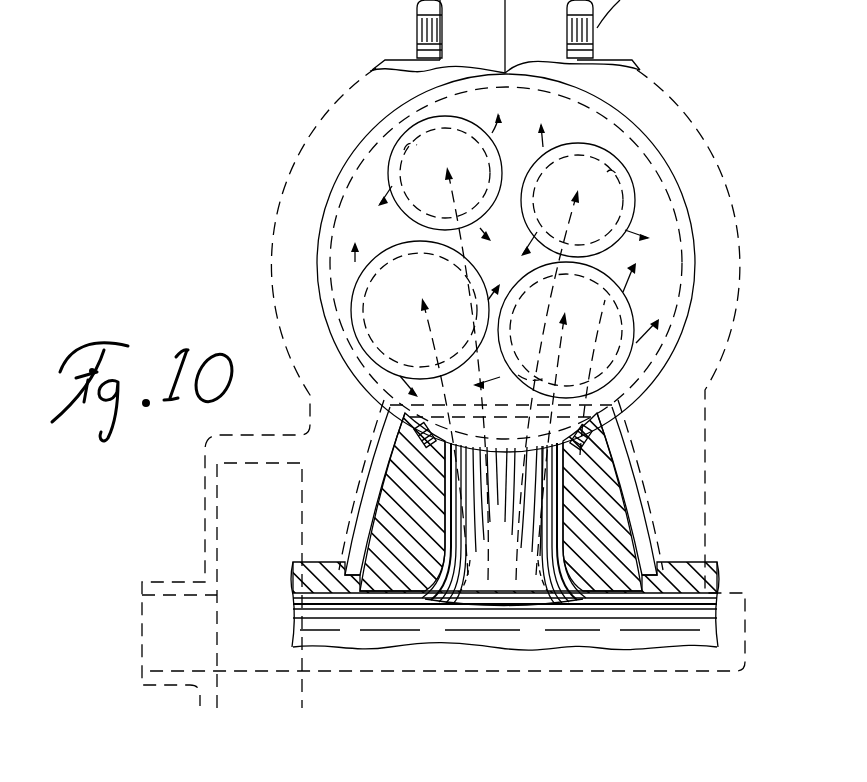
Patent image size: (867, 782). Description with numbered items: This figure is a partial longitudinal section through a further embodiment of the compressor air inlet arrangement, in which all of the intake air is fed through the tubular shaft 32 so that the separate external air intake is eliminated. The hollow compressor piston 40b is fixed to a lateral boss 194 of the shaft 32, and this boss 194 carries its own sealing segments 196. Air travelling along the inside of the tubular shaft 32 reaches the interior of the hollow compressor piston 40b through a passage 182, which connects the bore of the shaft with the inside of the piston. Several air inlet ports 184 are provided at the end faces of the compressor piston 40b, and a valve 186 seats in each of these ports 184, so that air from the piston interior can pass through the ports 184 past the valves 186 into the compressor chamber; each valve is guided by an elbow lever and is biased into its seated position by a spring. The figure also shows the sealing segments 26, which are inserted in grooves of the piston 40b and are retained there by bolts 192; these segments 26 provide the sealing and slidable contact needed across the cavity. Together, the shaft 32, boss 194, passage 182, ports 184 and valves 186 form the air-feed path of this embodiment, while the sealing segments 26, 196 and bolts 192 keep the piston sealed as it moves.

The sealing segments 26 is at (330, 262).
The compressor piston 40b is at (357, 200).
The valve 186 is at (372, 308).
The air inlet ports 184 is at (410, 143).
The bolts 192 is at (592, 436).
The passage 182 is at (557, 470).
The sealing segments 196 is at (637, 493).
The lateral boss 194 is at (603, 513).
The tubular shaft 32 is at (695, 575).